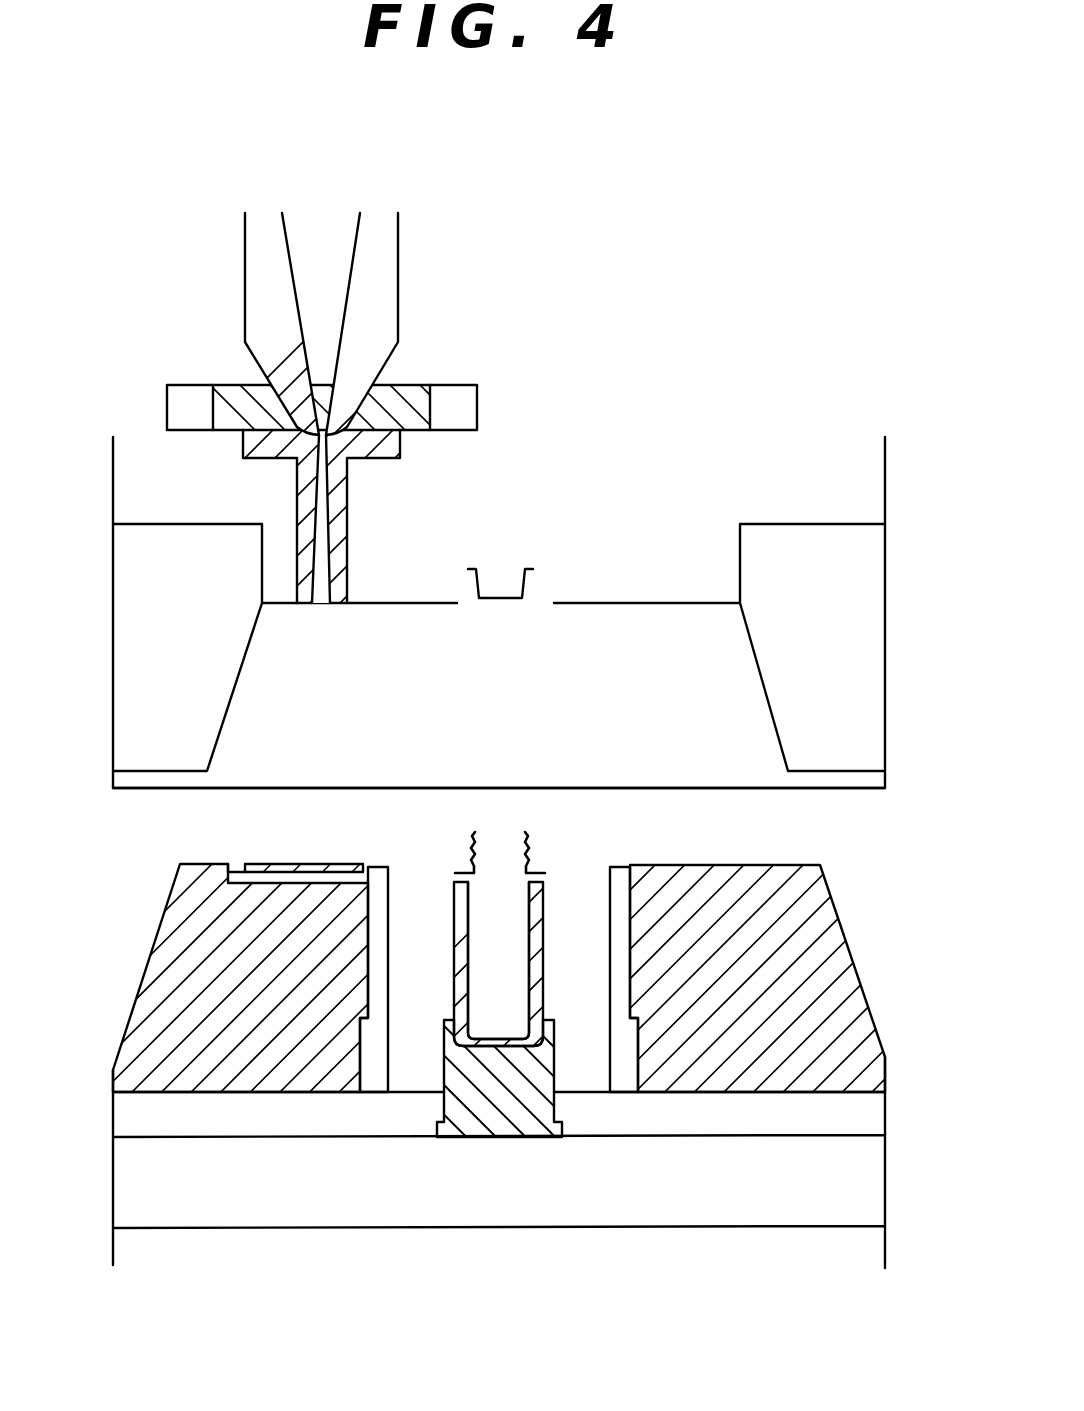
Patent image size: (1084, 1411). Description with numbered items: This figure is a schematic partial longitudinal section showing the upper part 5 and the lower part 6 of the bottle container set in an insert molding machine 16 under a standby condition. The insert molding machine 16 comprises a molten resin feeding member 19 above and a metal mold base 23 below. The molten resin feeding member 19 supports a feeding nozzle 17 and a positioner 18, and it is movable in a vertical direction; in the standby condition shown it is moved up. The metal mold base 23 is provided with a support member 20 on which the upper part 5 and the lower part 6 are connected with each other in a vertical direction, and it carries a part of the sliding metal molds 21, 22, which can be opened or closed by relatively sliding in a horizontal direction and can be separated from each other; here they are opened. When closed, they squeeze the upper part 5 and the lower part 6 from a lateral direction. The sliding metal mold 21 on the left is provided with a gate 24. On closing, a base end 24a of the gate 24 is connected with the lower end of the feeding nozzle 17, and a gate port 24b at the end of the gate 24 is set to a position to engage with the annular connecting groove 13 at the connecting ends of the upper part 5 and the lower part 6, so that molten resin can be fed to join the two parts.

The upper part 5 is at (511, 860).
The lower part 6 is at (511, 994).
The annular connecting groove 13 is at (453, 878).
The insert molding machine 16 is at (583, 290).
The feeding nozzle 17 is at (348, 492).
The positioner 18 is at (511, 579).
The molten resin feeding member 19 is at (863, 790).
The support member 20 is at (507, 1130).
The sliding metal mold 21 is at (238, 1085).
The sliding metal mold 22 is at (688, 1085).
The metal mold base 23 is at (807, 1220).
The gate 24 is at (278, 873).
The base end 24a is at (237, 868).
The gate port 24b is at (357, 873).